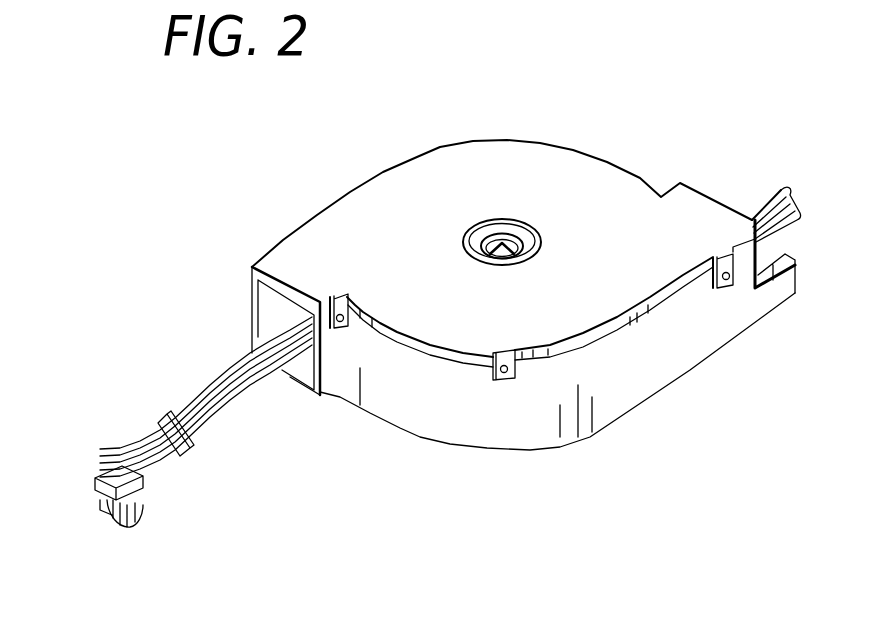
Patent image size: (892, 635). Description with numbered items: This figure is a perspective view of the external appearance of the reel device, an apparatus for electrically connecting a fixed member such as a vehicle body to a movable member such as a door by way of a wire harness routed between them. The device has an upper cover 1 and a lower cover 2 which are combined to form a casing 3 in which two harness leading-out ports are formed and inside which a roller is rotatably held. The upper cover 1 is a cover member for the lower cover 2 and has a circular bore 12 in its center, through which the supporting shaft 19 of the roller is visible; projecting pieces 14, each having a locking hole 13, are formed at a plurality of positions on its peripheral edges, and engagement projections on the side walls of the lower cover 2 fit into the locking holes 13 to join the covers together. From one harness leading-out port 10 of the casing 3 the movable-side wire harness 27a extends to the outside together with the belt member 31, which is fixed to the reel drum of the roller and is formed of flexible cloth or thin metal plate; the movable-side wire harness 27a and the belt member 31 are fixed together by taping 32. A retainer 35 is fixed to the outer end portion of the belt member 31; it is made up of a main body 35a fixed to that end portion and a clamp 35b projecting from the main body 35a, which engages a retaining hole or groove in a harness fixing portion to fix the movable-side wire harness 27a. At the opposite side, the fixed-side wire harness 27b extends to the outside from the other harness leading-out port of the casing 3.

The upper cover 1 is at (318, 214).
The lower cover 2 is at (647, 370).
The casing 3 is at (466, 132).
The harness leading-out port 10 is at (267, 304).
The circular bore 12 is at (532, 226).
The locking hole 13 is at (350, 330).
The projecting piece 14 is at (340, 326).
The supporting shaft 19 is at (543, 248).
The movable-side wire harness 27a is at (222, 374).
The fixed-side wire harness 27b is at (758, 208).
The belt member 31 is at (238, 402).
The taping 32 is at (184, 452).
The retainer 35 is at (102, 515).
The main body 35a is at (122, 477).
The clamp 35b is at (143, 505).